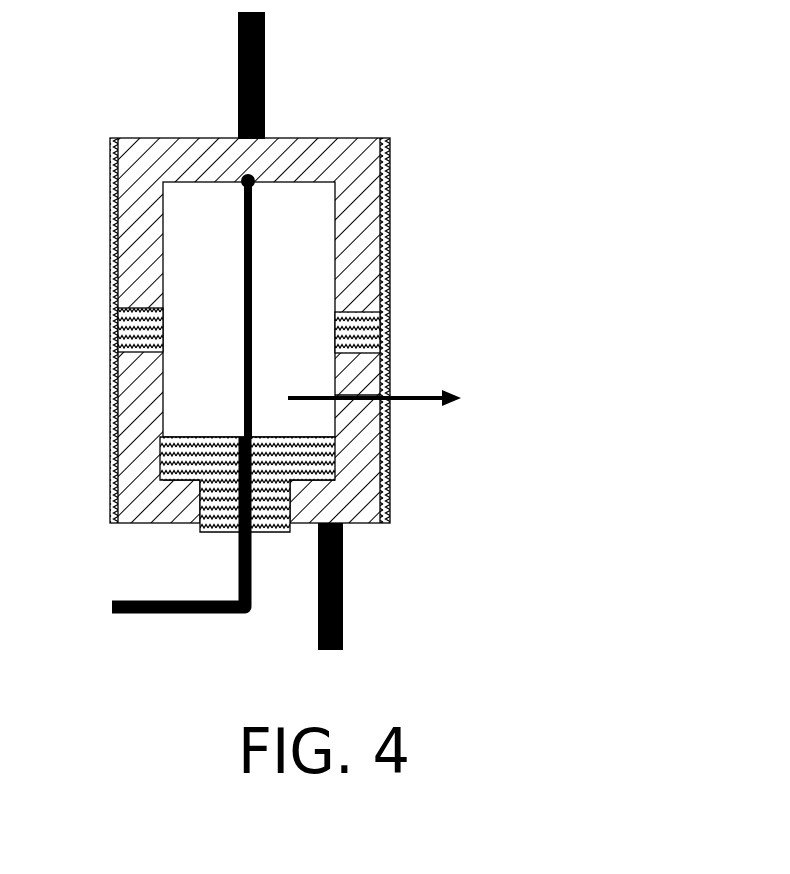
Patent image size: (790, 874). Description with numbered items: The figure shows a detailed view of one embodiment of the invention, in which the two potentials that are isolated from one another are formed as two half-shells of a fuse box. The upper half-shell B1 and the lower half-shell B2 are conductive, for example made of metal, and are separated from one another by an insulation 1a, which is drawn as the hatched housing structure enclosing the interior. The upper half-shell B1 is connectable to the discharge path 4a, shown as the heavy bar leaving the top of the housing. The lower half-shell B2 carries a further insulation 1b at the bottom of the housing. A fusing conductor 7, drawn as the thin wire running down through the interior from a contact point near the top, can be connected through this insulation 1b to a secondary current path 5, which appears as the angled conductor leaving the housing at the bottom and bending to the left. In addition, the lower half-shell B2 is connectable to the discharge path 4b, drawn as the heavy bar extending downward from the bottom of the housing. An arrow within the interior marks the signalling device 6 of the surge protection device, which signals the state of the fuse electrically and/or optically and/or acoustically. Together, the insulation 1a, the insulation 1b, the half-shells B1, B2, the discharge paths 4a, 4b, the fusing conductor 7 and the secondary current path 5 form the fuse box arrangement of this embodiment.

The insulation 1a is at (394, 148).
The insulation 1b is at (273, 466).
The discharge path 4a is at (272, 63).
The discharge path 4b is at (357, 618).
The secondary current path 5 is at (255, 567).
The signalling device 6 is at (455, 380).
The fusing conductor 7 is at (258, 322).
The upper half-shell B1 is at (390, 196).
The lower half-shell B2 is at (347, 432).